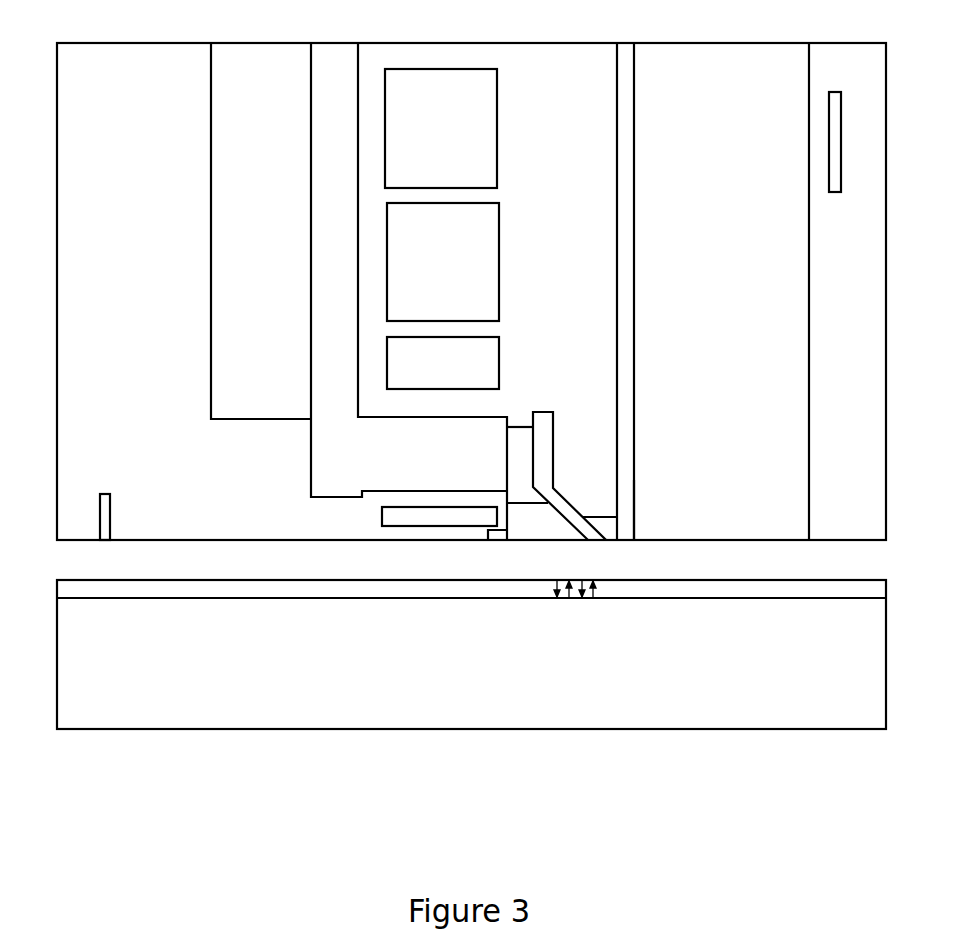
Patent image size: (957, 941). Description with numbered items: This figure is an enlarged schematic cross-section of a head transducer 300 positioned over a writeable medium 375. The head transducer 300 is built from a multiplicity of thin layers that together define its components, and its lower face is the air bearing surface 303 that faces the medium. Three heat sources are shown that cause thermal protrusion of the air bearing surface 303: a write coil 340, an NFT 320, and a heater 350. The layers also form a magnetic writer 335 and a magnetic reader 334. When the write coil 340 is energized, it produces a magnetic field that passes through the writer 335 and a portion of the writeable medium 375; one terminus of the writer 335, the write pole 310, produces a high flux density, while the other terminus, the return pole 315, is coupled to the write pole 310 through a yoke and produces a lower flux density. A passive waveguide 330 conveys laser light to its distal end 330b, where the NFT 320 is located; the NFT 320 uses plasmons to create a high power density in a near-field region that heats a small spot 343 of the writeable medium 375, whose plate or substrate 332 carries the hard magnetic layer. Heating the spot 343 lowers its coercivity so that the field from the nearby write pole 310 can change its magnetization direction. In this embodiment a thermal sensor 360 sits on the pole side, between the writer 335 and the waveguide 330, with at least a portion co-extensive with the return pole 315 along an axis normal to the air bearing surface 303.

The head transducer 300 is at (757, 43).
The air bearing surface 303 is at (58, 542).
The write pole 310 is at (544, 423).
The return pole 315 is at (321, 433).
The NFT 320 is at (604, 517).
The waveguide 330 is at (634, 425).
The distal end of the waveguide 330b is at (634, 520).
The plate or substrate 332 is at (491, 675).
The magnetic reader 334 is at (106, 508).
The writer 335 is at (181, 166).
The write coil 340 is at (493, 260).
The spot 343 is at (597, 582).
The heater 350 is at (838, 192).
The thermal sensor 360 is at (488, 530).
The writeable medium 375 is at (266, 785).